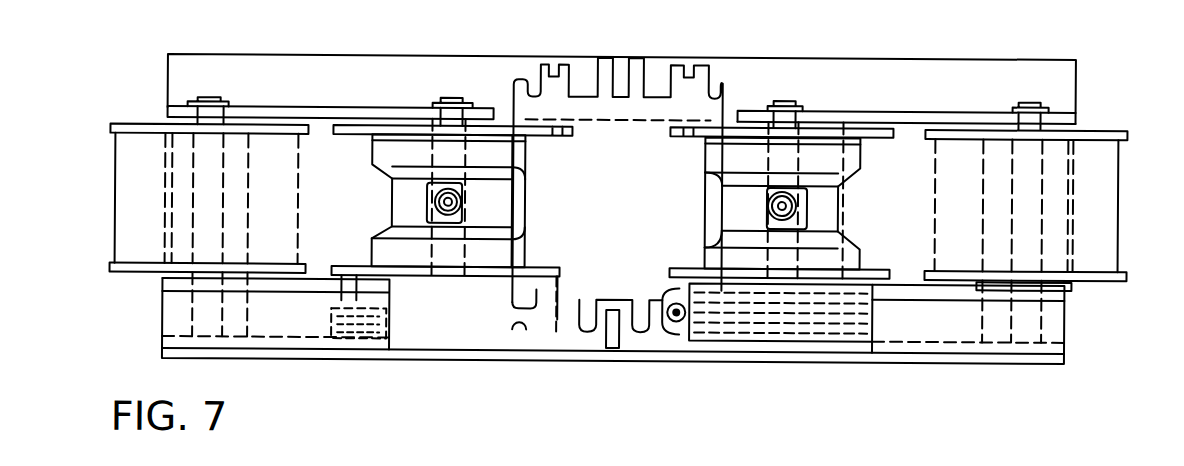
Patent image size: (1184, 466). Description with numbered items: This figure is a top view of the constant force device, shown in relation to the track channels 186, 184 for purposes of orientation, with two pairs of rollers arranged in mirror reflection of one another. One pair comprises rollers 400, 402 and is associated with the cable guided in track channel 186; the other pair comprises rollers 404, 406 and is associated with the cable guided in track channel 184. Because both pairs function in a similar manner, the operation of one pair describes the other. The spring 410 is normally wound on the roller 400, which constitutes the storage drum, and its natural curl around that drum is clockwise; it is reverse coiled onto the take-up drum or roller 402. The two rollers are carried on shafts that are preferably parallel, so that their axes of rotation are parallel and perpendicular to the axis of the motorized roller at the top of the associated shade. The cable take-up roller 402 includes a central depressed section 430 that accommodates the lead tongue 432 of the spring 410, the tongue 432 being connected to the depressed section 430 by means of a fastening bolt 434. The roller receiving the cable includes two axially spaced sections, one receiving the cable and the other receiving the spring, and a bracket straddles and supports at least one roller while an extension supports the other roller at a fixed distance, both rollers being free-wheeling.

The roller 400 is at (270, 160).
The spring 410 is at (333, 163).
The cable take-up roller 402 is at (393, 143).
The central section 430 is at (415, 197).
The lead tongue 432 is at (492, 212).
The fastening bolt 434 is at (462, 203).
The roller 404 is at (730, 158).
The roller 406 is at (1110, 186).
The track channel 186 is at (545, 333).
The track channel 184 is at (703, 327).